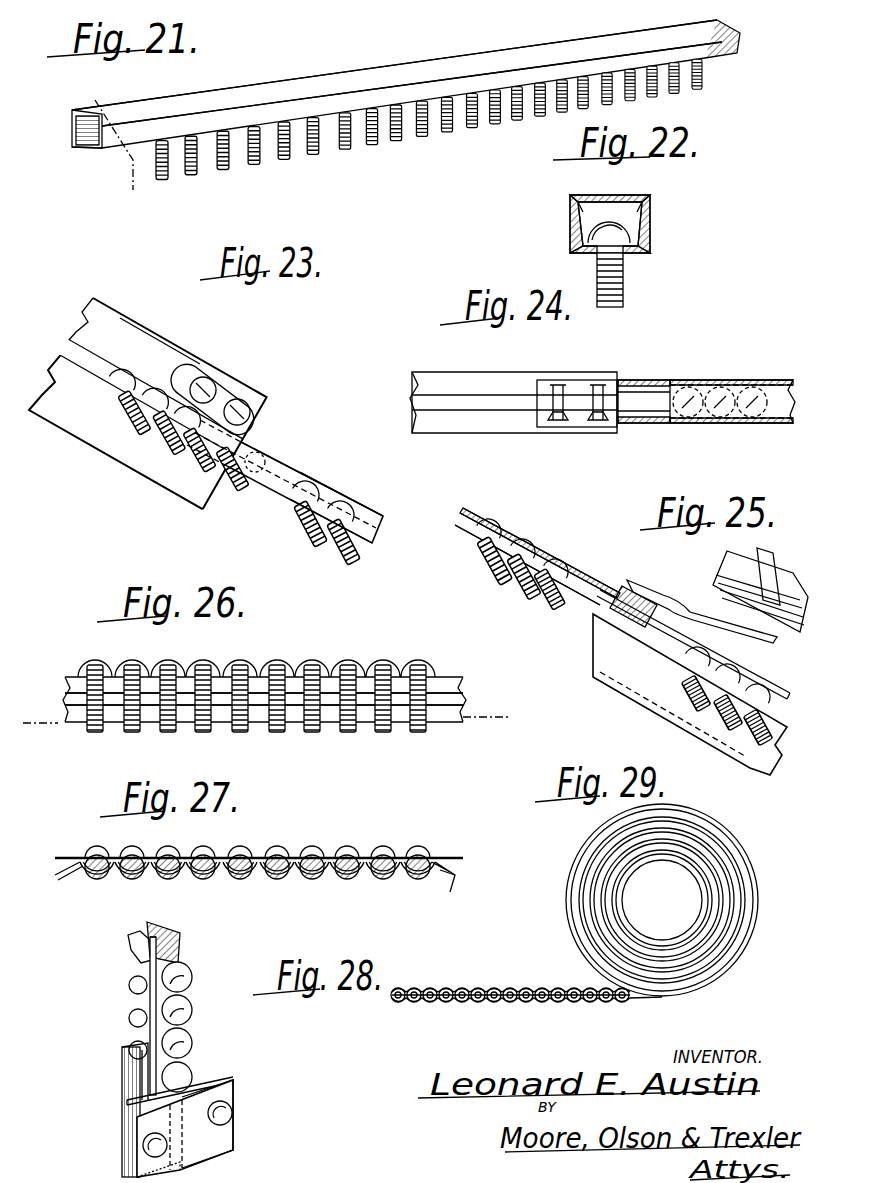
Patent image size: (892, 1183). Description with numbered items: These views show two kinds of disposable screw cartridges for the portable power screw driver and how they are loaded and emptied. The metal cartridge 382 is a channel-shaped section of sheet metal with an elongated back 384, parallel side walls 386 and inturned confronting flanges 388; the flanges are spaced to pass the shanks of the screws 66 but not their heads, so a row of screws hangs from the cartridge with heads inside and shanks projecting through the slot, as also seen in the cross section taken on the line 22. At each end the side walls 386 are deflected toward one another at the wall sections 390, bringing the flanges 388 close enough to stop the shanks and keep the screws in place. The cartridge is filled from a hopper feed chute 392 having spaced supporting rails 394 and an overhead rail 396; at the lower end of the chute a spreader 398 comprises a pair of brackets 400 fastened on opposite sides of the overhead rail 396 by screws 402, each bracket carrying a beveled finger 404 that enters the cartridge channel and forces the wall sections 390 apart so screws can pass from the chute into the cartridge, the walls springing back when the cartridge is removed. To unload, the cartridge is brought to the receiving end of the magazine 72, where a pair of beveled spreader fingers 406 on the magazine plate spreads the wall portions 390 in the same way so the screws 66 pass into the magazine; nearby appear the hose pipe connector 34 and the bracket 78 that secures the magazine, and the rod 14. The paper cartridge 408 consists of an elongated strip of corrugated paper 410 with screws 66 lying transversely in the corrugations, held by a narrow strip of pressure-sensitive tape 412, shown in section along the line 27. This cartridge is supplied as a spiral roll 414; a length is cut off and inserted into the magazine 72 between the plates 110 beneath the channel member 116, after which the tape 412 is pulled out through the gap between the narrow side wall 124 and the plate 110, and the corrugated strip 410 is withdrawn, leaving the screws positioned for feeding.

In FIG. 25, the rod 14 is at (787, 690).
In FIG. 21, the section line 22— 22 is at (97, 97).
In FIG. 26, the section line 27— 27 is at (485, 695).
In FIG. 25, the hose pipe connector 34 is at (781, 568).
In FIG. 21, the screws 66 is at (370, 146).
In FIG. 23, the screws 66 is at (311, 556).
In FIG. 24, the screws 66 is at (750, 385).
In FIG. 25, the screws 66 is at (502, 590).
In FIG. 26, the screws 66 is at (276, 662).
In FIG. 27, the screws 66 is at (307, 863).
In FIG. 28, the screws 66 is at (193, 1042).
In FIG. 29, the screws 66 is at (553, 1003).
In FIG. 25, the magazine 72 is at (753, 748).
In FIG. 28, the magazine 72 is at (241, 1119).
In FIG. 25, the bracket 78 is at (688, 613).
In FIG. 28, the strips or plates 110 is at (125, 1092).
In FIG. 28, the channel member 116 is at (121, 1046).
In FIG. 28, the second side wall 124 is at (122, 1084).
In FIG. 21, the metal cartridge 382 is at (437, 56).
In FIG. 22, the metal cartridge 382 is at (652, 194).
In FIG. 23, the metal cartridge 382 is at (334, 479).
In FIG. 24, the metal cartridge 382 is at (738, 377).
In FIG. 25, the metal cartridge 382 is at (527, 525).
In FIG. 21, the elongated back 384 is at (506, 60).
In FIG. 22, the elongated back 384 is at (600, 196).
In FIG. 24, the elongated back 384 is at (776, 424).
In FIG. 25, the elongated back 384 is at (552, 560).
In FIG. 21, the side walls 386 is at (600, 60).
In FIG. 22, the side walls 386 is at (575, 232).
In FIG. 23, the side walls 386 is at (369, 509).
In FIG. 24, the side walls 386 is at (700, 383).
In FIG. 25, the side walls 386 is at (465, 526).
In FIG. 21, the inturned confronting flanges 388 is at (78, 150).
In FIG. 22, the inturned confronting flanges 388 is at (588, 253).
In FIG. 23, the inturned confronting flanges 388 is at (375, 535).
In FIG. 24, the inturned confronting flanges 388 is at (640, 384).
In FIG. 25, the inturned confronting flanges 388 is at (466, 553).
In FIG. 21, the deflected wall sections 390 is at (76, 133).
In FIG. 22, the deflected wall sections 390 is at (628, 220).
In FIG. 23, the feed chute 392 is at (137, 313).
In FIG. 24, the feed chute 392 is at (422, 367).
In FIG. 23, the supporting rails 394 is at (73, 373).
In FIG. 24, the supporting rails 394 is at (412, 382).
In FIG. 23, the overhead rail 396 is at (143, 340).
In FIG. 24, the overhead rail 396 is at (483, 397).
In FIG. 23, the spreader 398 is at (225, 392).
In FIG. 24, the spreader 398 is at (580, 386).
In FIG. 23, the brackets 400 is at (250, 437).
In FIG. 24, the brackets 400 is at (537, 415).
In FIG. 23, the screws 402 is at (198, 418).
In FIG. 24, the screws 402 is at (592, 428).
In FIG. 23, the beveled finger 404 is at (256, 458).
In FIG. 24, the beveled finger 404 is at (626, 383).
In FIG. 25, the beveled spreader fingers 406 is at (625, 590).
In FIG. 26, the paper cartridge 408 is at (329, 731).
In FIG. 27, the paper cartridge 408 is at (368, 849).
In FIG. 28, the paper cartridge 408 is at (187, 937).
In FIG. 29, the paper cartridge 408 is at (523, 986).
In FIG. 26, the corrugated paper strip 410 is at (397, 682).
In FIG. 27, the corrugated paper strip 410 is at (463, 862).
In FIG. 28, the corrugated paper strip 410 is at (146, 926).
In FIG. 26, the tape 412 is at (437, 700).
In FIG. 27, the tape 412 is at (460, 857).
In FIG. 28, the tape 412 is at (150, 1000).
In FIG. 29, the tape 412 is at (543, 998).
In FIG. 29, the spiral roll 414 is at (734, 968).